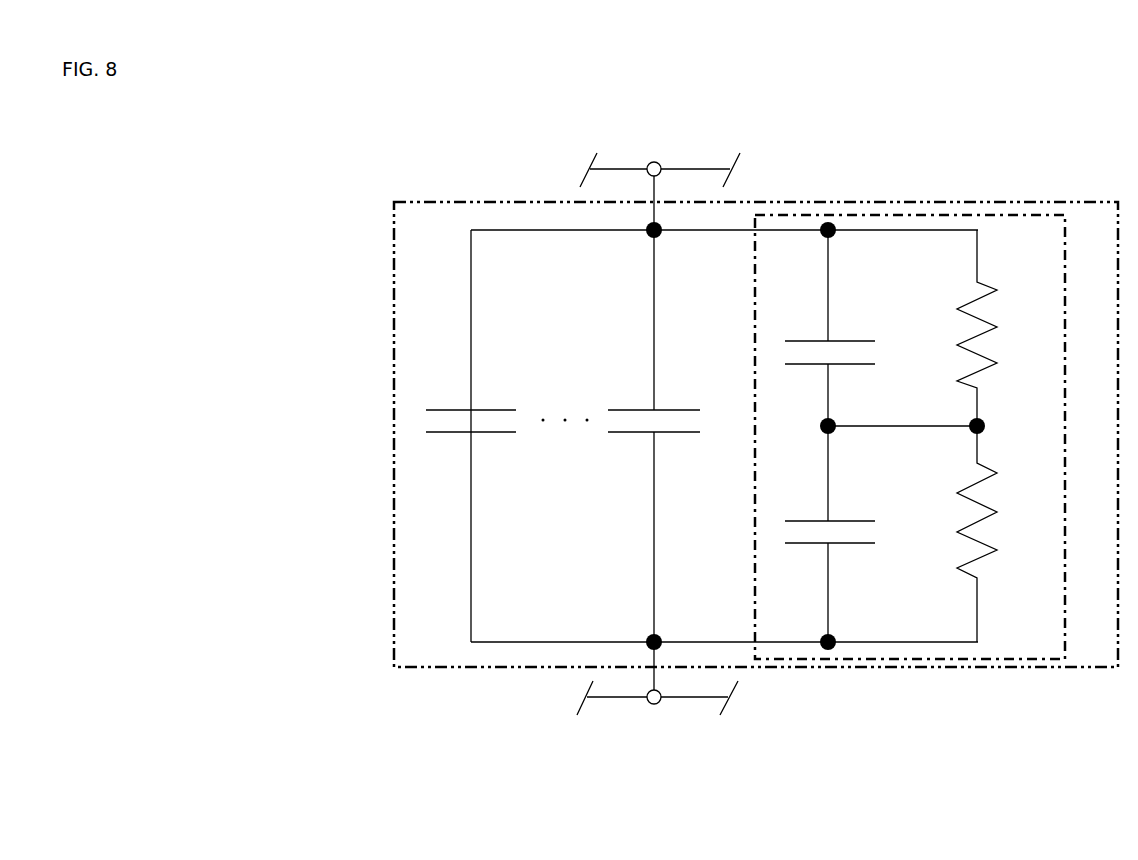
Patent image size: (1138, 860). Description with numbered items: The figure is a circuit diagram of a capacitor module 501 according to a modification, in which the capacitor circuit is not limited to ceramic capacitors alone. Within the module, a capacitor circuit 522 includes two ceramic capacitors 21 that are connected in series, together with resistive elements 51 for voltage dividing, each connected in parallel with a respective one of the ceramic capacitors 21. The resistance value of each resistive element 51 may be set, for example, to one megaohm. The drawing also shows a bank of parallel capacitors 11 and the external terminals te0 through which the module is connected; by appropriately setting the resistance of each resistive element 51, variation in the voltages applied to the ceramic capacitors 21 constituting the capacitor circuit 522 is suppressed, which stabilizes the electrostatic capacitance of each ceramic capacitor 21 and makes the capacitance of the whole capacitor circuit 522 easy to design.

The capacitor module 501 is at (518, 200).
The capacitor circuit 522 is at (875, 213).
The capacitor 11 is at (563, 401).
The ceramic capacitor 21 is at (830, 423).
The resistive element 51 is at (994, 436).
The external terminal te0 is at (655, 162).